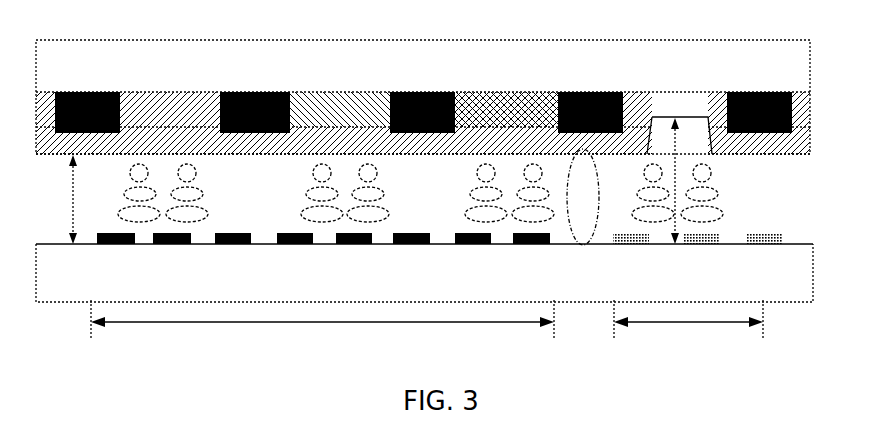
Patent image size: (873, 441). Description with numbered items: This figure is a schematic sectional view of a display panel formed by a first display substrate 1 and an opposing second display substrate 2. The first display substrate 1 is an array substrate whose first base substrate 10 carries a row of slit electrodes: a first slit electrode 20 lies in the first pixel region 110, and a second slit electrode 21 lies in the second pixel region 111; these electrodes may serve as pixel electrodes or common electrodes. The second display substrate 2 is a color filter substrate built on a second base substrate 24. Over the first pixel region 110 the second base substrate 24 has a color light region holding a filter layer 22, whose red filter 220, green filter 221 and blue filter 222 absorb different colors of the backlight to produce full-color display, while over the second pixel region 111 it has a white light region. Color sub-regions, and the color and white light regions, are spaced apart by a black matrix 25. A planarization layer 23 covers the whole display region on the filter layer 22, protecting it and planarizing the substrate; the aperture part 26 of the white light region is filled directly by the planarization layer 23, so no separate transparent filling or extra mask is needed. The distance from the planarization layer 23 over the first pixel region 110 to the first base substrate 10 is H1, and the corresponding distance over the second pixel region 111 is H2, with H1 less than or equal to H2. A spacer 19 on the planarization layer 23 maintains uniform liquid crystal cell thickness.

The first display substrate 1 is at (825, 232).
The second display substrate 2 is at (822, 40).
The first base substrate 10 is at (808, 300).
The spacer 19 is at (583, 225).
The first slit electrode 20 is at (230, 233).
The second slit electrode 21 is at (712, 233).
The filter layer 22 is at (423, 81).
The red filter 220 is at (157, 100).
The green filter 221 is at (325, 97).
The blue filter 222 is at (527, 97).
The planarization layer 23 is at (635, 92).
The second base substrate 24 is at (795, 78).
The black matrix 25 is at (70, 92).
The aperture part 26 is at (686, 92).
The first pixel region 110 is at (322, 326).
The second pixel region 111 is at (688, 326).
The distance H1 is at (73, 198).
The distance H2 is at (677, 153).